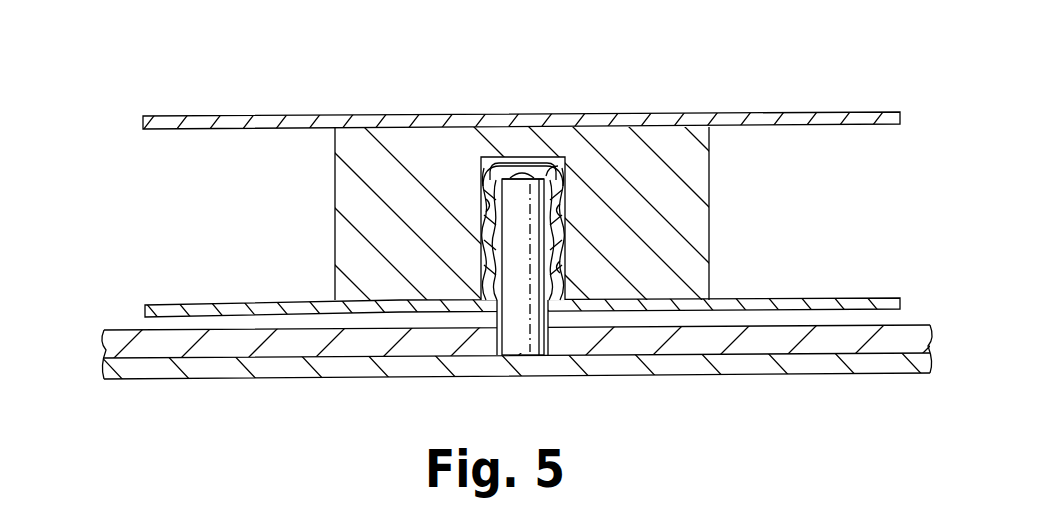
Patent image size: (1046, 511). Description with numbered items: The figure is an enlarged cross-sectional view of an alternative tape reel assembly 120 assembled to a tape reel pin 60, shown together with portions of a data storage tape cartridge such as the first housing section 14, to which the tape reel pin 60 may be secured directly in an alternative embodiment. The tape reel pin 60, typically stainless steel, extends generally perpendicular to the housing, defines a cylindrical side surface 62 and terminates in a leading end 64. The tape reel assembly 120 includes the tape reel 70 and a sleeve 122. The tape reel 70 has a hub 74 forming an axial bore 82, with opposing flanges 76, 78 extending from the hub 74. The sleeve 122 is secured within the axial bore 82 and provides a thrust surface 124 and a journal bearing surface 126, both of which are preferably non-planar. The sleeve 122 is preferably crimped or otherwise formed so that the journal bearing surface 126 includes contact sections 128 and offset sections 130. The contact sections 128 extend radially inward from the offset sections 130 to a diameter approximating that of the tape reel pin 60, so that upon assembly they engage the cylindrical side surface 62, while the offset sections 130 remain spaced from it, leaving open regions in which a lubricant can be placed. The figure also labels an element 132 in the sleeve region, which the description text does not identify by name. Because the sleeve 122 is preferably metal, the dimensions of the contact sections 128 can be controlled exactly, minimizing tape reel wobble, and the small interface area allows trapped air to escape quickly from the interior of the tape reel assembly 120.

The first housing section 14 is at (286, 374).
The tape reel pin 60 is at (518, 352).
The cylindrical side surface 62 is at (497, 292).
The leading end 64 is at (515, 176).
The tape reel 70 is at (516, 222).
The hub 74 is at (335, 184).
The flange 76 is at (237, 120).
The flange 78 is at (205, 311).
The axial bore 82 is at (502, 161).
The tape reel assembly 120 is at (486, 222).
The sleeve 122 is at (556, 158).
The thrust surface 124 is at (521, 162).
The journal bearing surface 126 is at (483, 204).
The contact sections 128 is at (566, 268).
The offset sections 130 is at (566, 211).
The seal sleeve 132 is at (482, 188).